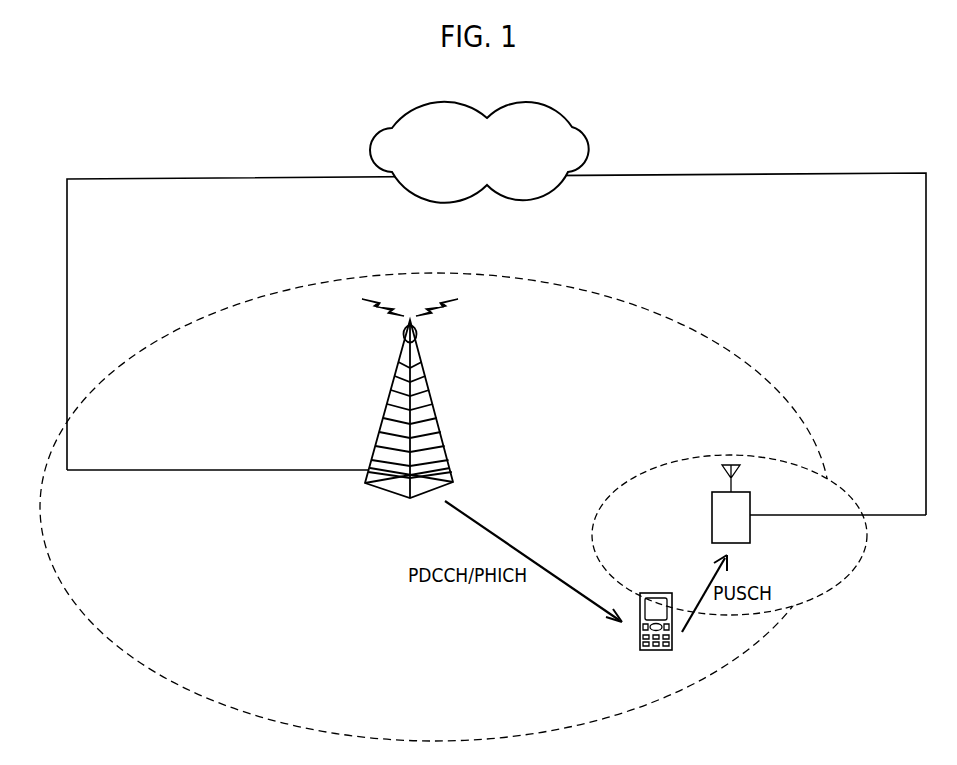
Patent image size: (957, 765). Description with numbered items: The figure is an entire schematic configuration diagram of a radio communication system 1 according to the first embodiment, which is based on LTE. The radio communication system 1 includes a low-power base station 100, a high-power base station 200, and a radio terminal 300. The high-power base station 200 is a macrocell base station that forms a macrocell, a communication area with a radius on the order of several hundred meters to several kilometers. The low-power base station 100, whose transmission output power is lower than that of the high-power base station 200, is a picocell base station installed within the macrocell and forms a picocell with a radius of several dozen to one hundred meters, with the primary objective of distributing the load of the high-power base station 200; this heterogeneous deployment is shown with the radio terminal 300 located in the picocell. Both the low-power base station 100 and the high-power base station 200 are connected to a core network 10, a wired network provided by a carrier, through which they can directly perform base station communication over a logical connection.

The radio communication system 1 is at (667, 270).
The core network 10 is at (548, 106).
The low-power base station 100 is at (712, 519).
The high-power base station 200 is at (380, 403).
The radio terminal 300 is at (640, 640).